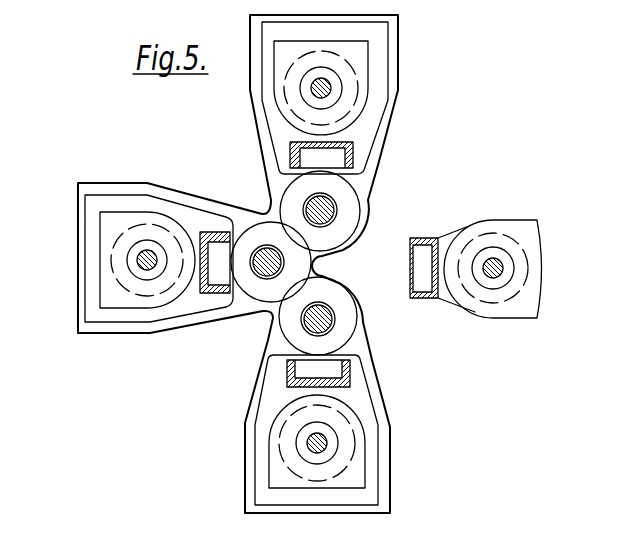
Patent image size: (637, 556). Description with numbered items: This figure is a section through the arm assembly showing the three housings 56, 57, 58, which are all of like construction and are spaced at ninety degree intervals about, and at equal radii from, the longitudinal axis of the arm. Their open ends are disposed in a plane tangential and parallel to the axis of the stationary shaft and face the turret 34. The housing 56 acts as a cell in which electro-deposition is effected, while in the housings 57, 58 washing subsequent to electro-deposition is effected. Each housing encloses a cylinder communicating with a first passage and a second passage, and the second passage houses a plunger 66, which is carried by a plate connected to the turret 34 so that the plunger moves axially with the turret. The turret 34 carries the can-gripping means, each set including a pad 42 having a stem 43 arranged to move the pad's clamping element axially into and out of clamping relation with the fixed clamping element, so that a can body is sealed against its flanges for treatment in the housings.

The turret 34 is at (432, 240).
The pad 42 is at (282, 98).
The stem 43 is at (331, 92).
The housing 56 is at (398, 447).
The housing 57 is at (108, 337).
The housing 58 is at (400, 80).
The plunger 66 is at (333, 206).